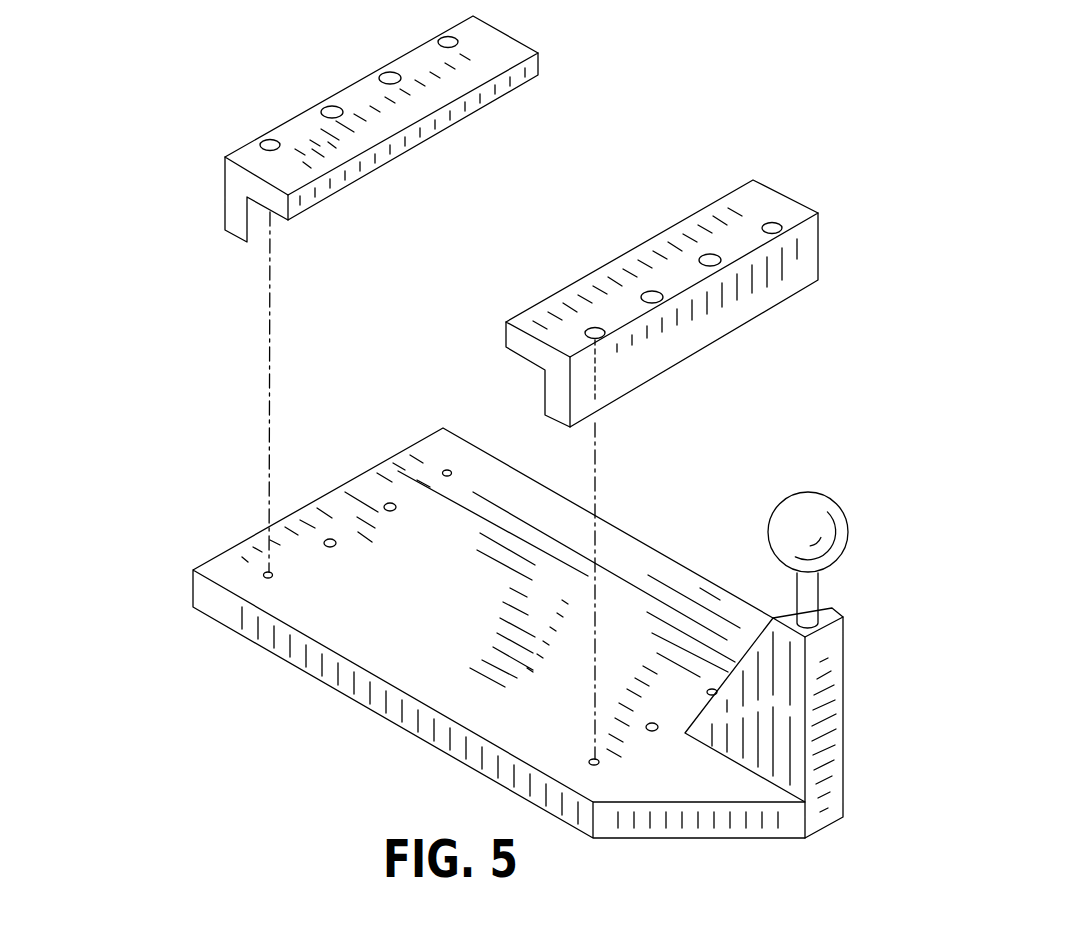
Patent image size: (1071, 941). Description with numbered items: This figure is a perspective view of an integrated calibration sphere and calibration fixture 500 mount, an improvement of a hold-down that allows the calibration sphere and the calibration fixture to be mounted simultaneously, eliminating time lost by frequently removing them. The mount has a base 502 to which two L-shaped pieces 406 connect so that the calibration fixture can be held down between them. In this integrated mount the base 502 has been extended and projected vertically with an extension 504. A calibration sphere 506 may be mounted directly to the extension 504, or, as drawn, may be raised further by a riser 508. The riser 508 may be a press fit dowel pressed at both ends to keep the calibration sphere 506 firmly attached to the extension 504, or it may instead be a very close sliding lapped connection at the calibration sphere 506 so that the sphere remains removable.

The integrated calibration sphere and calibration fixture mount 500 is at (172, 87).
The L-shaped piece 406 is at (238, 188).
The base 502 is at (382, 630).
The extension 504 is at (778, 733).
The calibration sphere 506 is at (823, 512).
The riser 508 is at (820, 593).